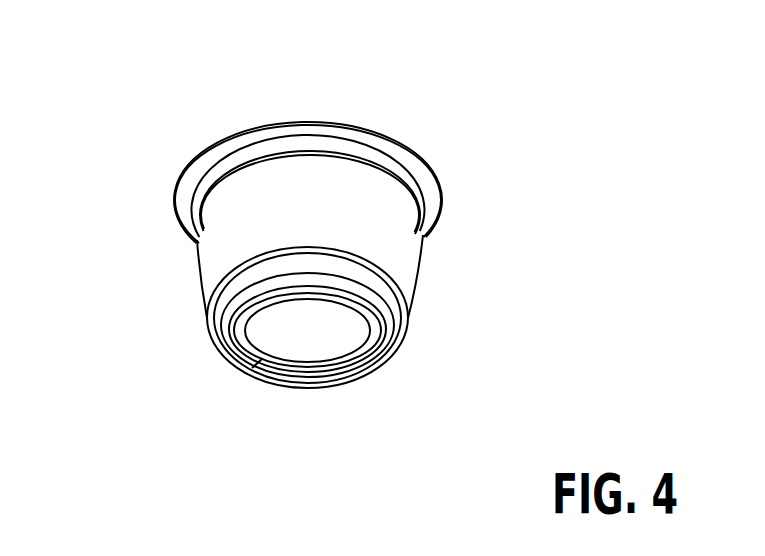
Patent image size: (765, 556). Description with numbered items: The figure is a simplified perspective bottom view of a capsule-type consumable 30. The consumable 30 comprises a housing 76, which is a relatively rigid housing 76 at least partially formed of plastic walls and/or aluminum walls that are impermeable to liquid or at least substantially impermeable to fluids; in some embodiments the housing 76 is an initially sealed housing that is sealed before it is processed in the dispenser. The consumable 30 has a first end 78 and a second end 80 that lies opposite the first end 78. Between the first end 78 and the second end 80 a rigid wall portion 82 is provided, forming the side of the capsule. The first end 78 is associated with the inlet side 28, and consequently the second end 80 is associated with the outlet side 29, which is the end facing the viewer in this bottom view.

The consumable 30 is at (289, 251).
The inlet side 28 is at (242, 78).
The outlet side 29 is at (242, 460).
The first end 78 is at (307, 120).
The housing 76 is at (197, 253).
The rigid wall portion 82 is at (400, 260).
The second end 80 is at (313, 353).